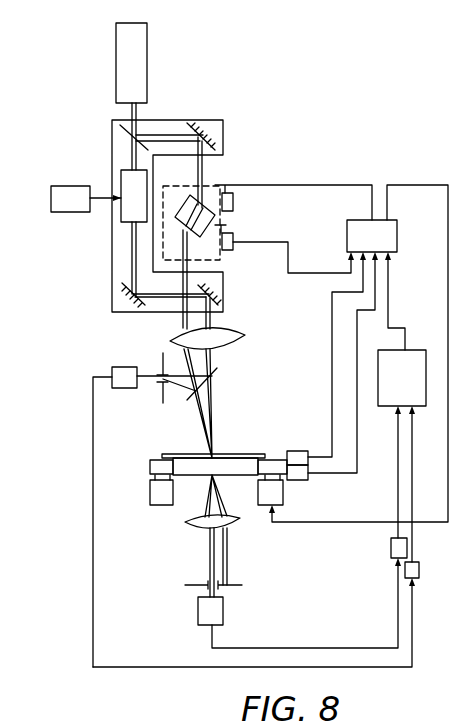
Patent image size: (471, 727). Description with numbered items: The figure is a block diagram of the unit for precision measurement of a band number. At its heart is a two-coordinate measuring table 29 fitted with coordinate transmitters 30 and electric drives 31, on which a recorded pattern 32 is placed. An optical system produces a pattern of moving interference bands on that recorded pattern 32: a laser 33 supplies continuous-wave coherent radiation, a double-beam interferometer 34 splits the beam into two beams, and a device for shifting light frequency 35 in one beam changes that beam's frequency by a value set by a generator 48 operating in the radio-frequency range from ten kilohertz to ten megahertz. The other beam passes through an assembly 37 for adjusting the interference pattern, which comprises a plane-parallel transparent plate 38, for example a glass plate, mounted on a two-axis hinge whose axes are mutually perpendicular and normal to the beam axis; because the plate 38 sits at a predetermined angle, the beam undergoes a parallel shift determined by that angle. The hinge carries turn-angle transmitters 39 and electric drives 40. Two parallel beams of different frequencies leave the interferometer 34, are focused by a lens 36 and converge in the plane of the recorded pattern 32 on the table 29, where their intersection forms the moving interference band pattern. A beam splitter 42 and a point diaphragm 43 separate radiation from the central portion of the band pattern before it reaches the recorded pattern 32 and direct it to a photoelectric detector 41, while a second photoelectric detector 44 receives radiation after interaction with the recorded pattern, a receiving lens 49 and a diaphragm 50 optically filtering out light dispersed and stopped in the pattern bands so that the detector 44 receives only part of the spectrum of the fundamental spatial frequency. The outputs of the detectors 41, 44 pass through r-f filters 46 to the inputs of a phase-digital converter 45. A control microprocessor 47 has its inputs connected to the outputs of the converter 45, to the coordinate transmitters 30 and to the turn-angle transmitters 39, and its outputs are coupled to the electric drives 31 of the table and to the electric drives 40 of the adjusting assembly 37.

The two-coordinate measuring table 29 is at (150, 465).
The coordinate transmitters 30 is at (302, 451).
The electric drives 31 is at (150, 496).
The recorded pattern 32 is at (200, 454).
The laser 33 is at (117, 58).
The double-beam interferometer 34 is at (112, 137).
The device for shifting light frequency 35 is at (128, 180).
The lens 36 is at (245, 336).
The assembly for adjusting an interference pattern 37 is at (215, 186).
The plane-parallel transparent plate 38 is at (182, 198).
The turn-angle transmitters 39 is at (232, 250).
The electric drives 40 is at (233, 203).
The photoelectric detector 41 is at (132, 367).
The beam splitter 42 is at (218, 368).
The point diaphragm 43 is at (160, 393).
The photoelectric detector 44 is at (223, 611).
The phase-digital converter 45 is at (410, 364).
The r-f filters 46 is at (407, 548).
The control microprocessor 47 is at (347, 235).
The generator 48 is at (77, 212).
The receiving lens 49 is at (200, 527).
The diaphragm 50 is at (185, 585).